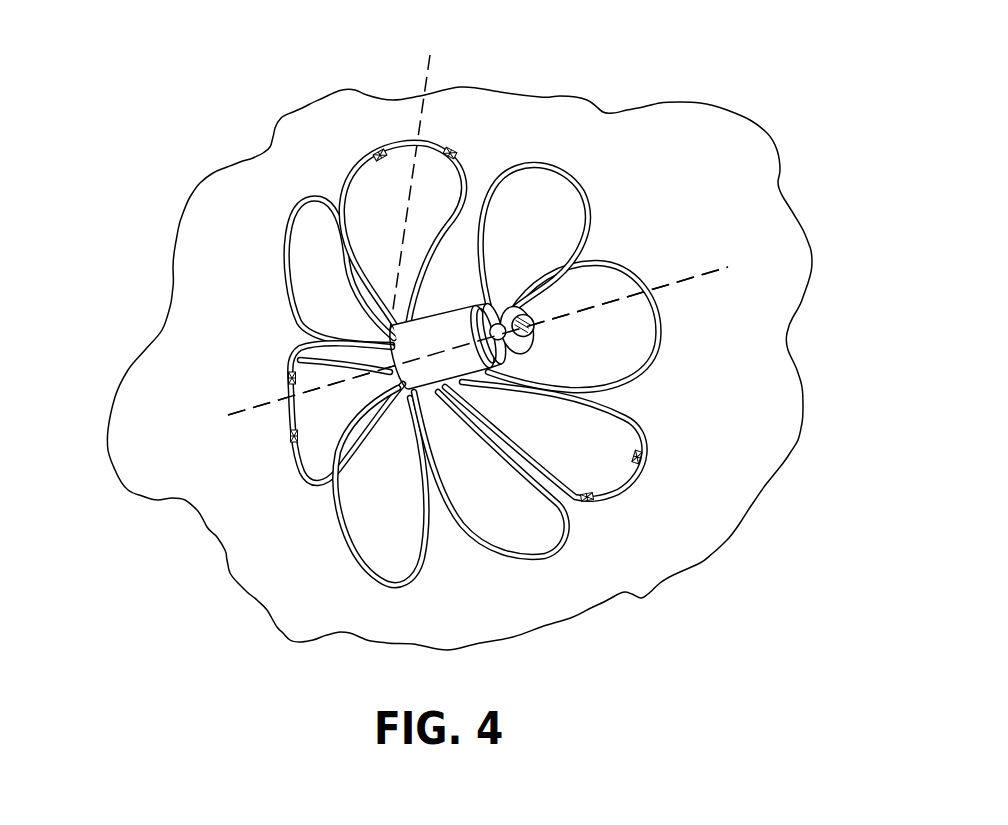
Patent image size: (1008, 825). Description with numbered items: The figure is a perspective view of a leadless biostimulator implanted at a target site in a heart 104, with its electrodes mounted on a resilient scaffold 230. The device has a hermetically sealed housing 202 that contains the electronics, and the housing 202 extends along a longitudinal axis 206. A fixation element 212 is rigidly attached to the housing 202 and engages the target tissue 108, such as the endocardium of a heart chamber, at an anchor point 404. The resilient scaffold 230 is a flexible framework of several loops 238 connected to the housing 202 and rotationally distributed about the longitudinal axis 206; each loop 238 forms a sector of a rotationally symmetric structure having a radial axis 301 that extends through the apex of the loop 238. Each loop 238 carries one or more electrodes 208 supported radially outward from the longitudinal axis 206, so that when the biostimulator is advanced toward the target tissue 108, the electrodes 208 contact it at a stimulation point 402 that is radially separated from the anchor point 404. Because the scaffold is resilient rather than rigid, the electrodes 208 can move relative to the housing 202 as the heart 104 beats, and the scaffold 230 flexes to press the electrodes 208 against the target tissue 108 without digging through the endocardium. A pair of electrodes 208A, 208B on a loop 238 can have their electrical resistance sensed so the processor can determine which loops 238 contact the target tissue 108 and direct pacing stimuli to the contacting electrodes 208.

The heart 104 is at (454, 368).
The target tissue 108 is at (208, 200).
The housing 202 is at (397, 337).
The longitudinal axis 206 is at (698, 276).
The electrode 208 is at (600, 367).
The first electrode of a pair 208A is at (290, 378).
The second electrode of a pair 208B is at (292, 436).
The fixation element 212 is at (310, 290).
The resilient scaffold 230 is at (566, 170).
The loop 238 is at (463, 163).
The radial axis 301 is at (428, 84).
The stimulation point 402 is at (642, 457).
The anchor point 404 is at (440, 348).